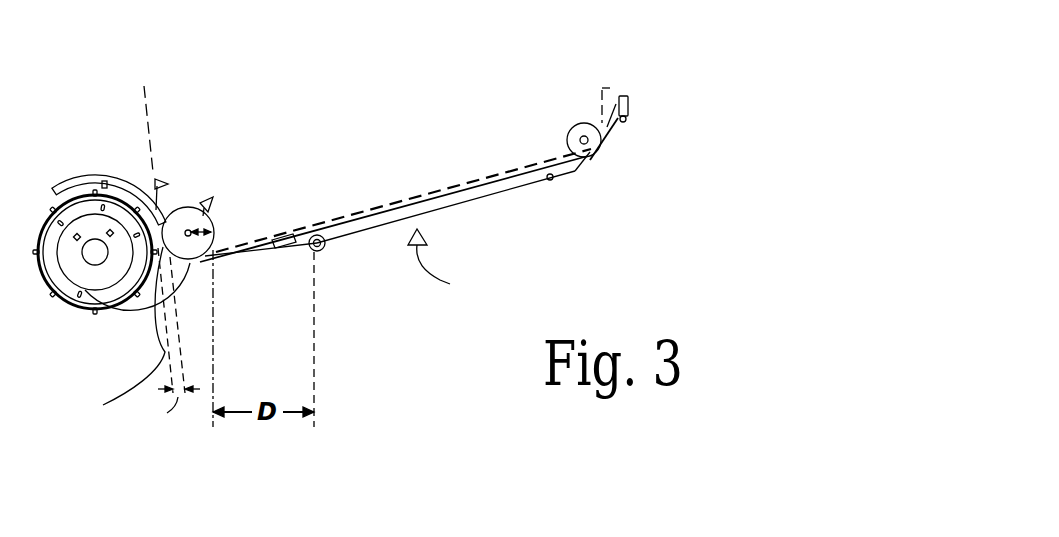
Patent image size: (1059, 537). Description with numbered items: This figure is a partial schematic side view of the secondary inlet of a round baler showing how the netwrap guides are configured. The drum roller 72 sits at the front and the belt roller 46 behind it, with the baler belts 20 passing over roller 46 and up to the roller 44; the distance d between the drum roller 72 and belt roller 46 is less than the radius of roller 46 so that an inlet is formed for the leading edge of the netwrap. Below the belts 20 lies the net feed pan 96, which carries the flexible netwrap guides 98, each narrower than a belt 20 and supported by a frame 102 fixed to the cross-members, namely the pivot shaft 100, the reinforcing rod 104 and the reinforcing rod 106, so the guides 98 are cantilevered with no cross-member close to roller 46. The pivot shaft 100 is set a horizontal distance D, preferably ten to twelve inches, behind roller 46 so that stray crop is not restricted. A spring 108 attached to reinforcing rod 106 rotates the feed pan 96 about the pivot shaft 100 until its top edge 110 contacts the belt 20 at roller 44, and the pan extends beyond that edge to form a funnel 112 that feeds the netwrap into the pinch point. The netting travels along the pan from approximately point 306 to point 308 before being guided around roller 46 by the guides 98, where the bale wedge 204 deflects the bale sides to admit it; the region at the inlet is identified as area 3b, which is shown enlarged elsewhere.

The baler belt 20 is at (605, 88).
The roller 44 is at (572, 133).
The belt roller 46 is at (103, 405).
The drum roller 72 is at (45, 290).
The net feed pan 96 is at (450, 264).
The netwrap guide 98 is at (182, 258).
The pivot shaft 100 is at (322, 252).
The frame 102 is at (472, 198).
The reinforcing rod 104 is at (552, 180).
The reinforcing rod 106 is at (627, 121).
The spring 108 is at (630, 100).
The top edge 110 is at (590, 157).
The funnel 112 is at (622, 95).
The bale wedge 204 is at (100, 243).
The point 306 is at (217, 257).
The point 308 is at (170, 352).
The area 3b is at (185, 191).